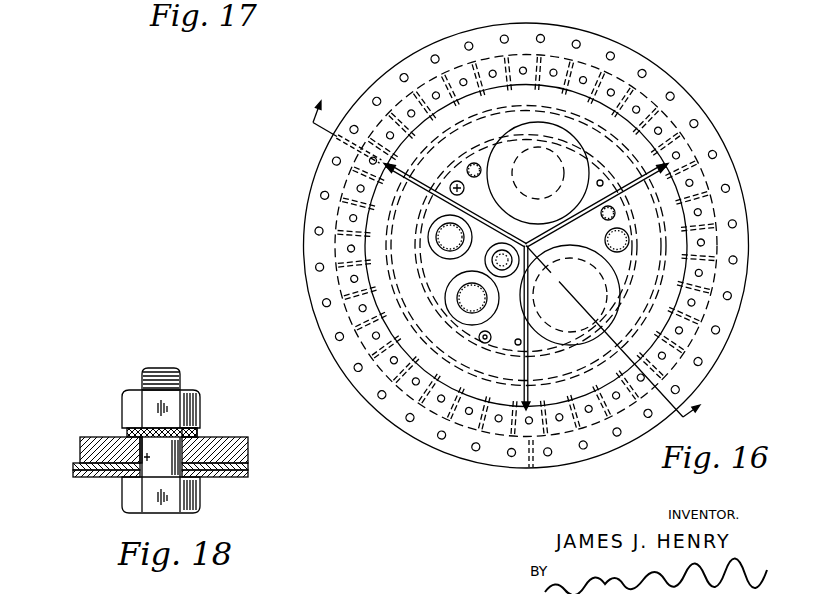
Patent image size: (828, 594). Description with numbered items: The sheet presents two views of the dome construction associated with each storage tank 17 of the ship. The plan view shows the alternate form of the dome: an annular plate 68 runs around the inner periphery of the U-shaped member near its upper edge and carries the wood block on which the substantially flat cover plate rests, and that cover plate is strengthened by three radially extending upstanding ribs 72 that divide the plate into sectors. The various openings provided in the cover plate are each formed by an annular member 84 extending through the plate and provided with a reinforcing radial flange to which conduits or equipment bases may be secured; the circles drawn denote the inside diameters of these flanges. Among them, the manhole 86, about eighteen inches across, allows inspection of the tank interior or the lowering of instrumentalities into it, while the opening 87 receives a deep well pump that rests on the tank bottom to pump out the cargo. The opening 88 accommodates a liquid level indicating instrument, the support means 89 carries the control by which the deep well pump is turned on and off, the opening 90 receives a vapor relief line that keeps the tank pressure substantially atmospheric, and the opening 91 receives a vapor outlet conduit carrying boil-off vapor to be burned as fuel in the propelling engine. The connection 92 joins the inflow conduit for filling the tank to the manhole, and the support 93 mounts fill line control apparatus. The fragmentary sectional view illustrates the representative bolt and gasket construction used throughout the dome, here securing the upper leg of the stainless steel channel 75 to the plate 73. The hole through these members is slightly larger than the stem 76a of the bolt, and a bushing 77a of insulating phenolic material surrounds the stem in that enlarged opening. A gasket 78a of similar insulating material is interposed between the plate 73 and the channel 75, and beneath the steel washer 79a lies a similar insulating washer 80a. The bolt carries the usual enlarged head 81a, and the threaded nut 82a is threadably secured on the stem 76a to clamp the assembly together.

In FIG. 16, the annular plate 68 is at (683, 102).
In FIG. 16, the radially extending upstanding ribs 72 is at (541, 371).
In FIG. 16, the annular member 84 is at (585, 286).
In FIG. 16, the manhole 86 is at (570, 295).
In FIG. 16, the deep well pump opening 87 is at (538, 173).
In FIG. 16, the liquid level instrument opening 88 is at (505, 268).
In FIG. 16, the pump control support means 89 is at (485, 343).
In FIG. 16, the vapor relief line opening 90 is at (463, 293).
In FIG. 16, the vapor outlet opening 91 is at (460, 191).
In FIG. 16, the inflow conduit connection 92 is at (629, 240).
In FIG. 16, the fill line control support 93 is at (440, 240).
In FIG. 16, the storage tank 17 is at (512, 251).
In FIG. 18, the plate 73 is at (249, 445).
In FIG. 18, the stainless steel channel 75 is at (236, 476).
In FIG. 18, the stem of the bolt 76a is at (123, 477).
In FIG. 18, the bushing 77a is at (141, 452).
In FIG. 18, the gasket 78a is at (80, 464).
In FIG. 18, the steel washer 79a is at (130, 431).
In FIG. 18, the insulating washer 80a is at (196, 434).
In FIG. 18, the enlarged head 81a is at (198, 497).
In FIG. 18, the threaded nut 82a is at (130, 403).